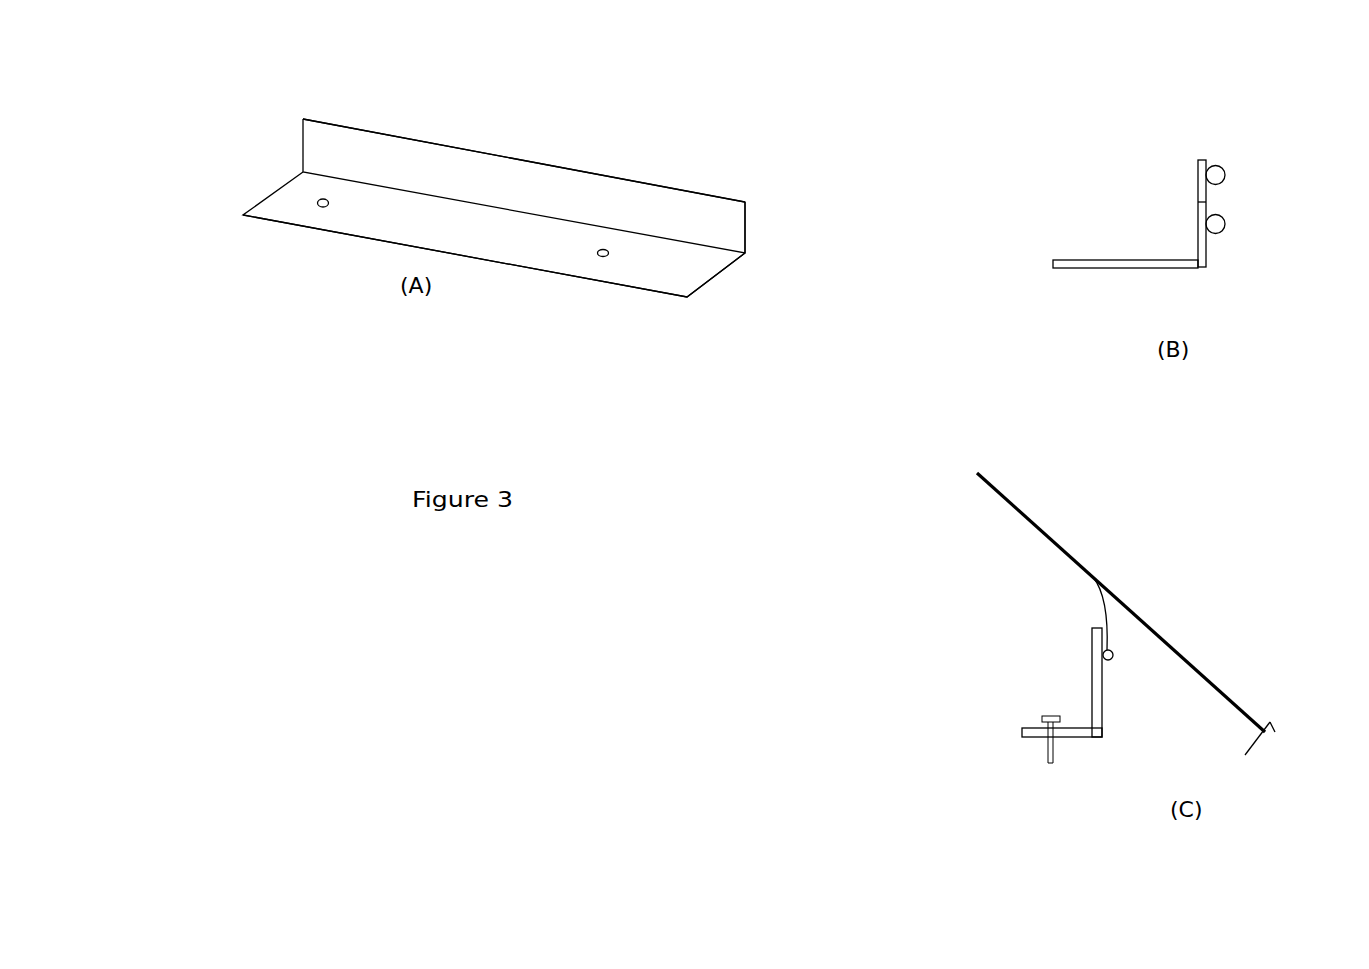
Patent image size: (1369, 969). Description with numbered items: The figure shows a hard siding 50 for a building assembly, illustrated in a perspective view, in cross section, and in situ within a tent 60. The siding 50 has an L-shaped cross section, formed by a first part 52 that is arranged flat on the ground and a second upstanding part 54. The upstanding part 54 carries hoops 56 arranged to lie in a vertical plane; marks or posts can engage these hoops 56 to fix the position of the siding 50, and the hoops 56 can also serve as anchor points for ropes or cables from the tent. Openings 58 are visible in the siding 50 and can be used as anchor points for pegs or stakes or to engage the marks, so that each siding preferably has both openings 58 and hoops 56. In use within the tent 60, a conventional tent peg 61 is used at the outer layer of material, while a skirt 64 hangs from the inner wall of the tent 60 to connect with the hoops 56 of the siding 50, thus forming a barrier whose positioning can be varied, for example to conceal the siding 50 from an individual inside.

In FIG. 3A, the siding 50 is at (268, 157).
In FIG. 3C, the siding 50 is at (1020, 728).
In FIG. 3A, the first part 52 is at (698, 263).
In FIG. 3B, the first part 52 is at (1065, 265).
In FIG. 3A, the second upstanding part 54 is at (747, 218).
In FIG. 3B, the second upstanding part 54 is at (1206, 202).
In FIG. 3B, the hoops 56 is at (1220, 170).
In FIG. 3C, the hoops 56 is at (1103, 655).
In FIG. 3A, the openings 58 is at (317, 207).
In FIG. 3C, the tent 60 is at (1117, 563).
In FIG. 3C, the tent peg 61 is at (1263, 732).
In FIG. 3C, the skirt 64 is at (1100, 595).